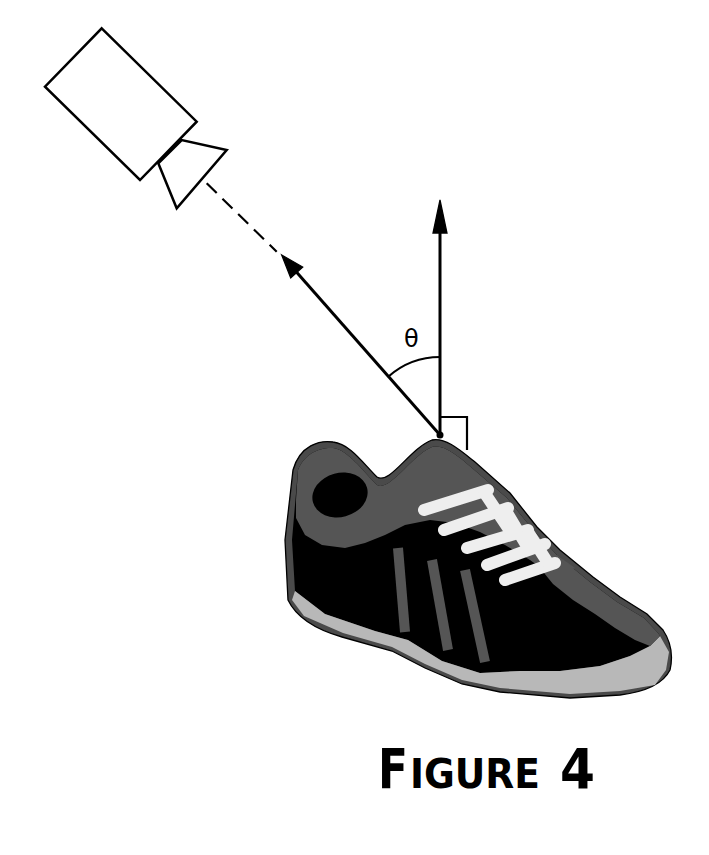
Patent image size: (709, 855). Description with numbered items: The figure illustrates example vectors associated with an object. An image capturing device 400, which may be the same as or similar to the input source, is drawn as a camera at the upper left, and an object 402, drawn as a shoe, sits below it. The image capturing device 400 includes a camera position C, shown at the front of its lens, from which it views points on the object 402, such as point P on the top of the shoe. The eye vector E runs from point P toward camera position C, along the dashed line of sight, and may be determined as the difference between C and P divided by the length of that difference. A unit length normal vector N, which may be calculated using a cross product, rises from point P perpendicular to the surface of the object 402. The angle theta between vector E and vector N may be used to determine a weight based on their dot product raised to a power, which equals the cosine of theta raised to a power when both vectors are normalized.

The image capturing device 400 is at (155, 64).
The object 402 is at (597, 480).
The camera position C is at (242, 210).
The eye vector E is at (361, 345).
The normal vector N is at (451, 317).
The point on the object P is at (422, 429).